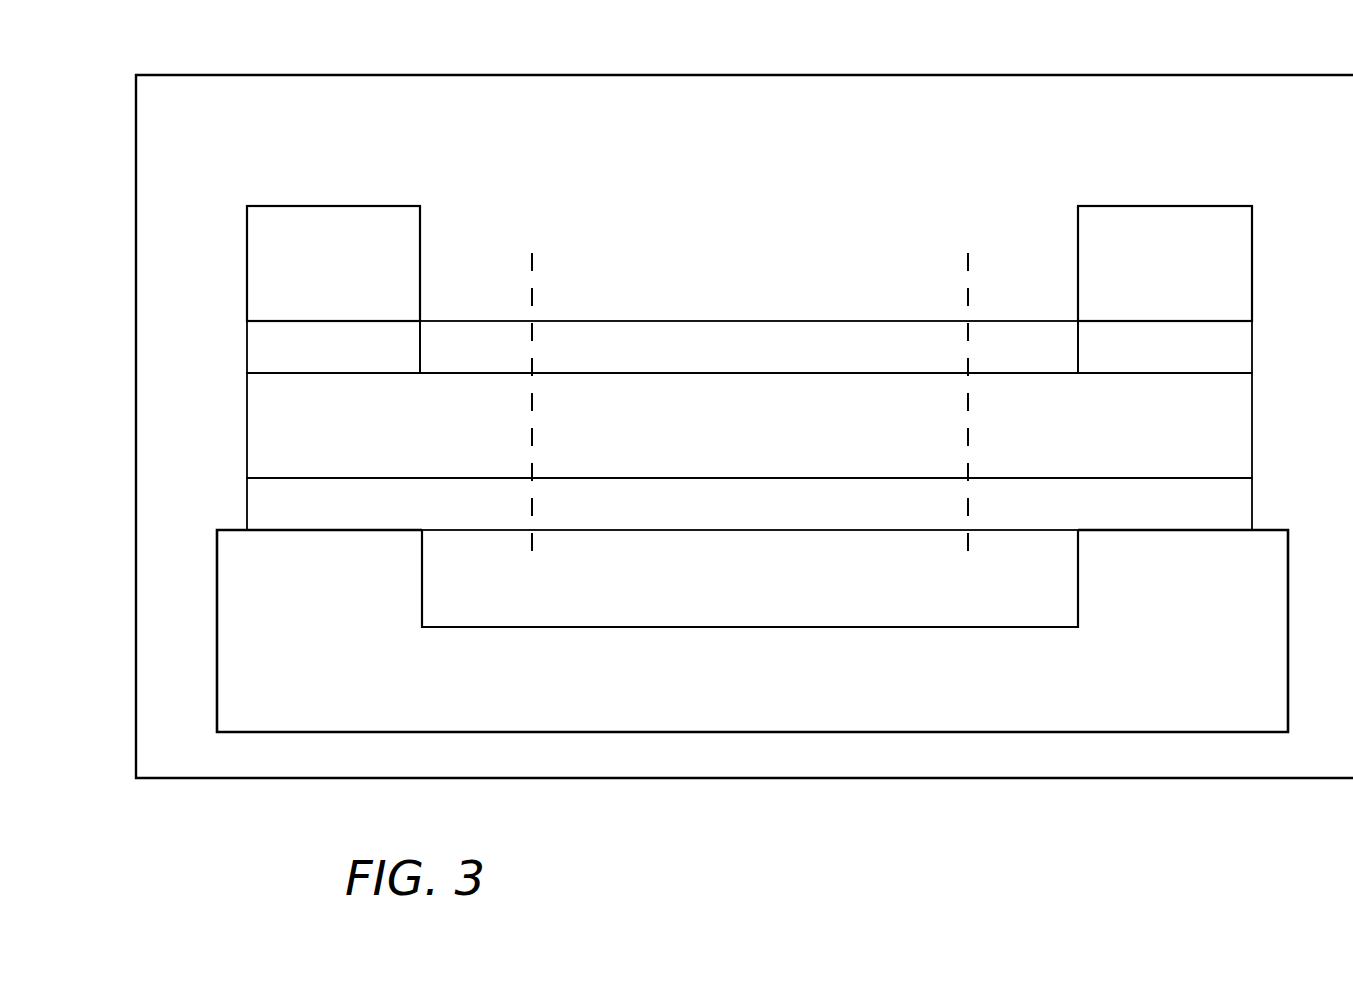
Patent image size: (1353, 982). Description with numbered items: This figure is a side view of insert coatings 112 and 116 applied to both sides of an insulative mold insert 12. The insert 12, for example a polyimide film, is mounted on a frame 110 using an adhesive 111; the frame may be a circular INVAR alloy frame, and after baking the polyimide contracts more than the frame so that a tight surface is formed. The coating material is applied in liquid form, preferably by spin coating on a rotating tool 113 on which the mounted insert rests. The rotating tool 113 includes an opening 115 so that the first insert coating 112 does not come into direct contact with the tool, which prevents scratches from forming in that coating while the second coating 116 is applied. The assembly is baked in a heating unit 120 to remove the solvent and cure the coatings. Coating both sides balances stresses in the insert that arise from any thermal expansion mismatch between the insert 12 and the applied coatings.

The insulative mold insert 12 is at (749, 436).
The frame 110 is at (319, 268).
The adhesive 111 is at (319, 362).
The insert coating 112 is at (746, 519).
The rotating tool 113 is at (889, 713).
The opening 115 is at (745, 591).
The insert coating 116 is at (741, 361).
The heating unit 120 is at (513, 120).